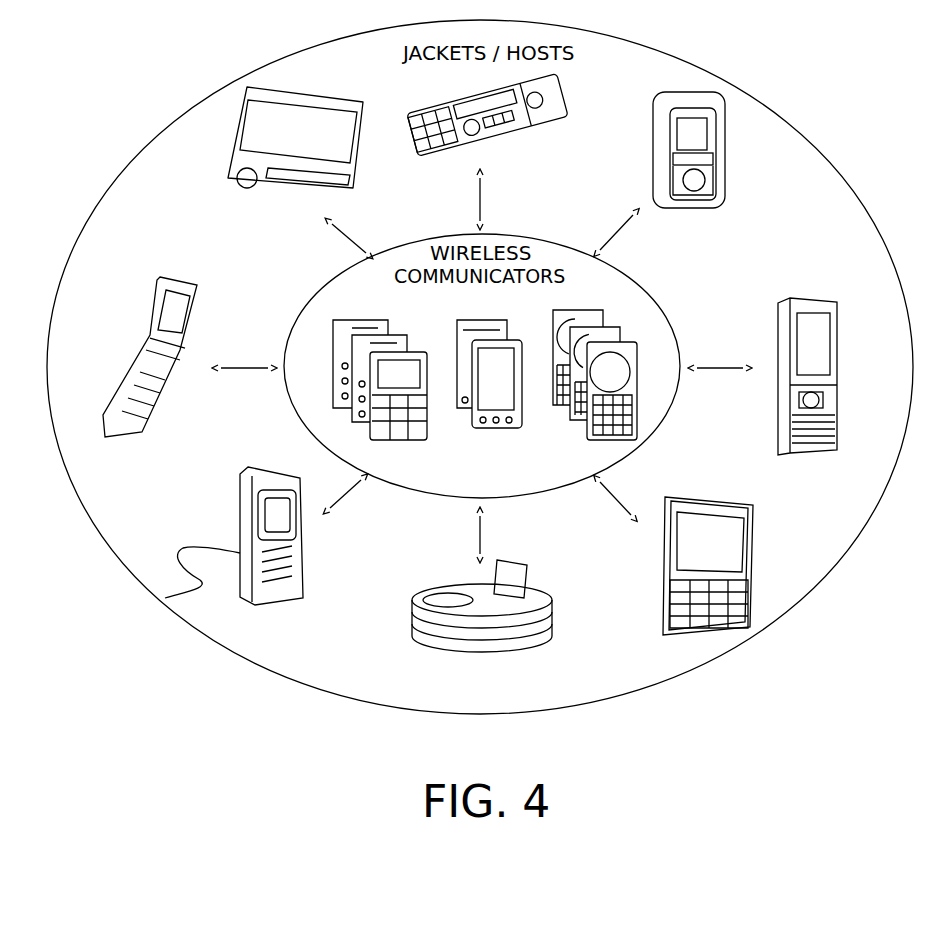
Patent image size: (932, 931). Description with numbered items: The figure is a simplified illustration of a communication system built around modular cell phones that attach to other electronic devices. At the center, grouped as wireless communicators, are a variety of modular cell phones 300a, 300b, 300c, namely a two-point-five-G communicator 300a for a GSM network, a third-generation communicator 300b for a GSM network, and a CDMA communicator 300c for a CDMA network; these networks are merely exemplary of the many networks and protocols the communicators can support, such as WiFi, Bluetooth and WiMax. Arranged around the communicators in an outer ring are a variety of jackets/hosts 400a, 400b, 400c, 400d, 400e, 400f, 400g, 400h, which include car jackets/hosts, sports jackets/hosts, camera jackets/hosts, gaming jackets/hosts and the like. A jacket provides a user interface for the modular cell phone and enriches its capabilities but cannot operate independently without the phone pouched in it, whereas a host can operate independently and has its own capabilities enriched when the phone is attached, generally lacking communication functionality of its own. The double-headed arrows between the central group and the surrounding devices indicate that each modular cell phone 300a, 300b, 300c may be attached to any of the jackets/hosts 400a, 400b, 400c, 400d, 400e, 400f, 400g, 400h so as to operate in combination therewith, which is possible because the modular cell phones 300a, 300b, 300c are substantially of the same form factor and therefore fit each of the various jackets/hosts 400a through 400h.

The modular cell phone 300a is at (415, 444).
The modular cell phone 300b is at (488, 430).
The modular cell phone 300c is at (568, 422).
The jacket/host 400a is at (546, 123).
The jacket/host 400b is at (727, 184).
The jacket/host 400c is at (842, 360).
The jacket/host 400d is at (757, 531).
The jacket/host 400e is at (533, 577).
The jacket/host 400f is at (305, 546).
The jacket/host 400g is at (196, 313).
The jacket/host 400h is at (362, 185).